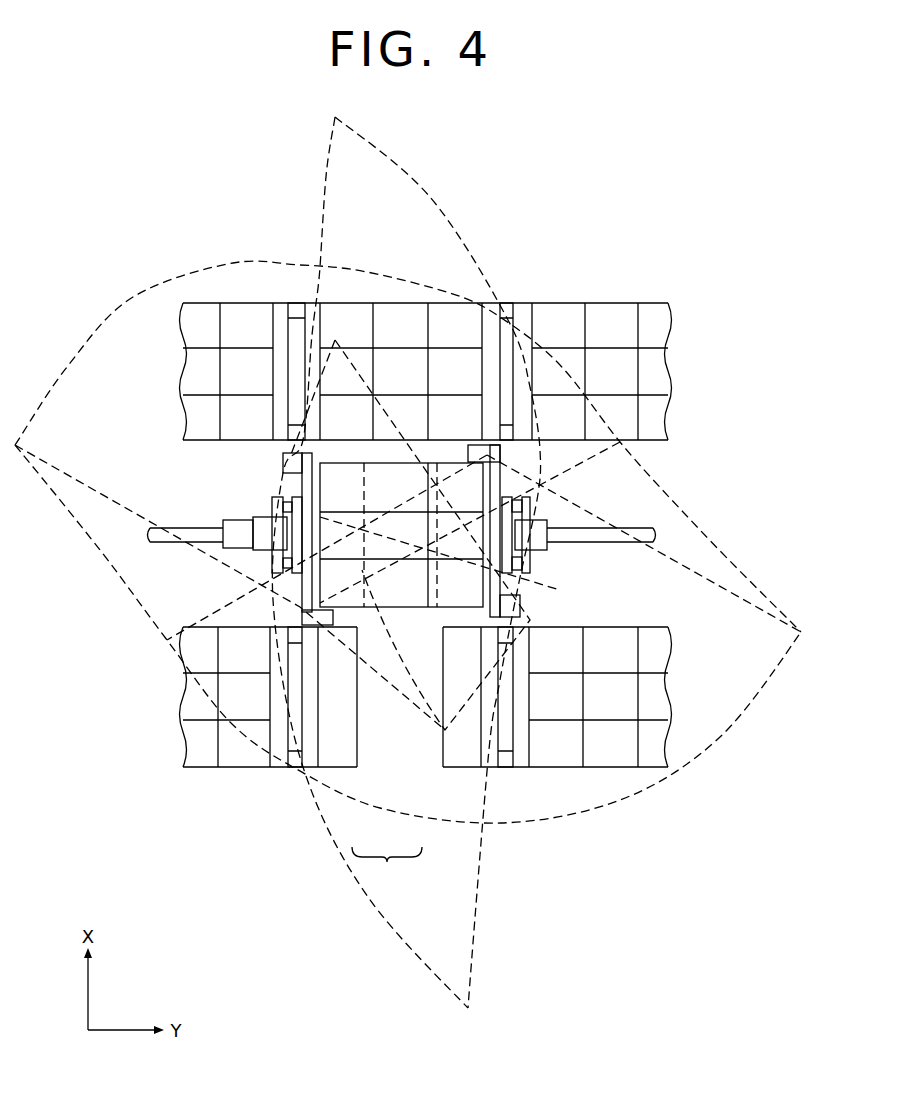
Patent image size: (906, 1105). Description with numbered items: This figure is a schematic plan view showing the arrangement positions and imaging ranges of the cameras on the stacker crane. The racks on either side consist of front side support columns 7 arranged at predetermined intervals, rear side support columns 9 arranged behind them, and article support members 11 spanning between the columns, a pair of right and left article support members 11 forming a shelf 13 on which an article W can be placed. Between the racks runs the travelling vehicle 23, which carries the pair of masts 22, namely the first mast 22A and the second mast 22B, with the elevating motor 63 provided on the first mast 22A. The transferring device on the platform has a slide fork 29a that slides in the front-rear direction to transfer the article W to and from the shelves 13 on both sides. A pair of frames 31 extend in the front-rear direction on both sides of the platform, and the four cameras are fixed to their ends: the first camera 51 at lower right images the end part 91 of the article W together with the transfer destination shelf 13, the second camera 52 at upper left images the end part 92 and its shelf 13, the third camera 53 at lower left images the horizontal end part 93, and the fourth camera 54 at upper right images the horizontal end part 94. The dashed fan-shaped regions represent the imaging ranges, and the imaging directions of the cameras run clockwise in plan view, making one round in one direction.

The front side support column 7 is at (297, 432).
The rear side support column 9 is at (297, 312).
The article support member 11 is at (310, 315).
The shelf 13 is at (387, 867).
The masts 22 is at (264, 518).
The first mast 22A is at (270, 545).
The second mast 22B is at (548, 540).
The travelling vehicle 23 is at (507, 580).
The slide fork 29a is at (386, 590).
The frame 31 is at (283, 497).
The first camera 51 is at (492, 657).
The second camera 52 is at (283, 460).
The third camera 53 is at (310, 630).
The fourth camera 54 is at (480, 450).
The elevating motor 63 is at (235, 528).
The end part 91 is at (458, 598).
The end part 92 is at (400, 460).
The end part 93 is at (287, 523).
The end part 94 is at (484, 530).
The article W is at (383, 315).